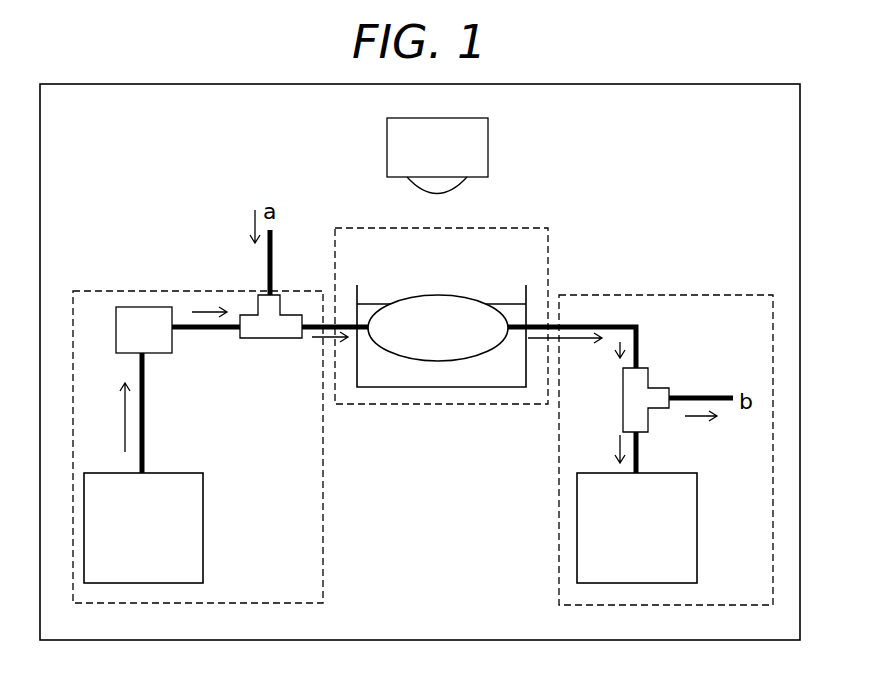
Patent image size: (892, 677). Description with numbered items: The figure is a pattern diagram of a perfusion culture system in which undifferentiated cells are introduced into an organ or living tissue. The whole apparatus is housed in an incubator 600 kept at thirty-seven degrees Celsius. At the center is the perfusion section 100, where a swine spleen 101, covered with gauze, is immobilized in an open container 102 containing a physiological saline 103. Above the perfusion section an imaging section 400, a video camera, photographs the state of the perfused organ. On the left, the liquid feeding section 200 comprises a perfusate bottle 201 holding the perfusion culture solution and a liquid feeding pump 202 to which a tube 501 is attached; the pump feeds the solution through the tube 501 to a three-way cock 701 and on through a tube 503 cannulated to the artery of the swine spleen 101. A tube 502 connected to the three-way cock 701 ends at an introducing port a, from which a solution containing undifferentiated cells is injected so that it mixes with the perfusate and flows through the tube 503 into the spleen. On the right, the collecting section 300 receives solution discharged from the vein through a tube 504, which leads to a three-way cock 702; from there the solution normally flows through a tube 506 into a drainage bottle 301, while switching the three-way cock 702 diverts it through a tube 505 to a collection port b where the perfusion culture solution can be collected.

The incubator 600 is at (235, 84).
The imaging section 400 is at (488, 146).
The liquid feeding section 200 is at (200, 603).
The perfusate bottle 201 is at (203, 530).
The liquid feeding pump 202 is at (130, 307).
The tube 501 is at (146, 418).
The tube 502 is at (267, 275).
The tube 503 is at (315, 322).
The three-way cock 701 is at (272, 340).
The perfusion section 100 is at (470, 404).
The swine spleen 101 is at (440, 296).
The open container 102 is at (378, 388).
The physiological saline 103 is at (380, 300).
The tube 504 is at (585, 325).
The three-way cock 702 is at (622, 400).
The tube 505 is at (697, 396).
The tube 506 is at (640, 440).
The drainage bottle 301 is at (577, 520).
The collecting section 300 is at (667, 605).